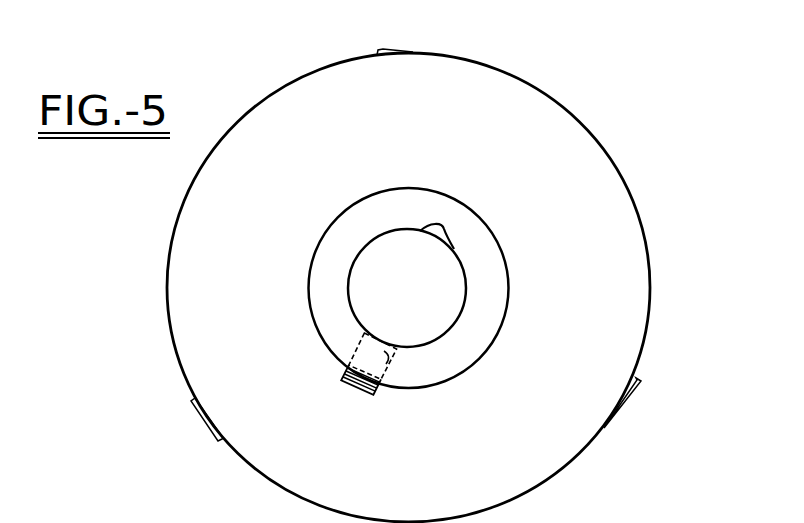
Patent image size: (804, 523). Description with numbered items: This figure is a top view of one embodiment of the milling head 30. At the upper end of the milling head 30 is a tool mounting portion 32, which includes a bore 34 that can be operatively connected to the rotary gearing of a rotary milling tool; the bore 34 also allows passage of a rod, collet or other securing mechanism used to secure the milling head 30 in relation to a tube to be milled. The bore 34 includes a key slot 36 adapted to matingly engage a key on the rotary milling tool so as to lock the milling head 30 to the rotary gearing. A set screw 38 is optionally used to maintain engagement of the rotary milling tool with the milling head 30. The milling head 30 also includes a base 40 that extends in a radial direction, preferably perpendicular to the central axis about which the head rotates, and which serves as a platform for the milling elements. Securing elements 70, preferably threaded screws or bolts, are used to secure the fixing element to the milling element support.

The milling head 30 is at (365, 269).
The tool mounting portion 32 is at (365, 288).
The bore 34 is at (469, 288).
The key slot 36 is at (412, 251).
The set screw 38 is at (384, 387).
The base 40 is at (364, 287).
The securing elements 70 is at (431, 251).